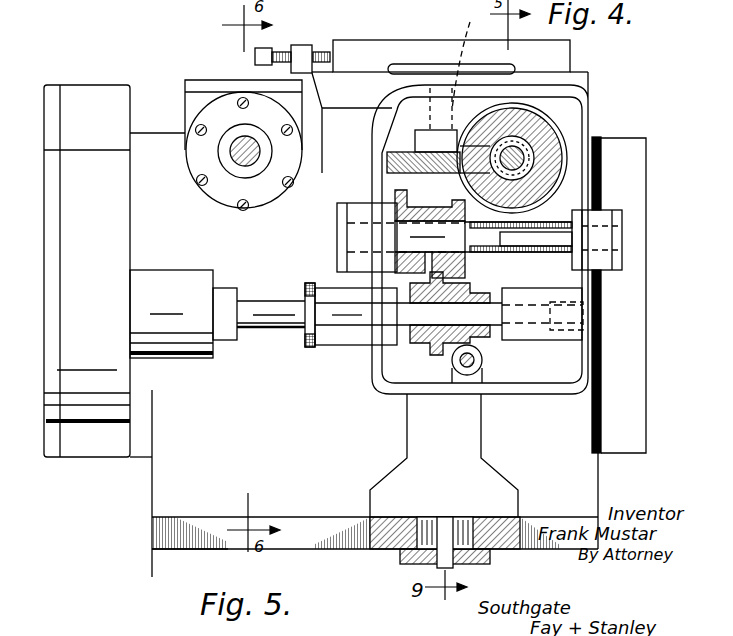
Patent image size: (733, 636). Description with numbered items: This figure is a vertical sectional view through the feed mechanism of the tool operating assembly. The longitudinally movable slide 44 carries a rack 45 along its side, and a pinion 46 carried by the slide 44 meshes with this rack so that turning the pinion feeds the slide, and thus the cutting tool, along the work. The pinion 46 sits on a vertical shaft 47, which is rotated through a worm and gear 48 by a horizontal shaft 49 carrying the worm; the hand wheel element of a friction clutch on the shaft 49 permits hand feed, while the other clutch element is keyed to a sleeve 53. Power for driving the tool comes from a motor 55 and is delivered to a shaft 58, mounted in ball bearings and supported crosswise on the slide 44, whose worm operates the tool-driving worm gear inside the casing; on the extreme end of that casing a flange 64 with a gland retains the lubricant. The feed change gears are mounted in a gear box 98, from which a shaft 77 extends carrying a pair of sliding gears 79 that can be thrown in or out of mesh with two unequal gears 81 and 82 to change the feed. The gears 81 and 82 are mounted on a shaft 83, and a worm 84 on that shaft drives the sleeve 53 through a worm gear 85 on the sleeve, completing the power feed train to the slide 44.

The longitudinally movable slide 44 is at (262, 447).
The rack 45 is at (175, 549).
The pinion 46 is at (445, 528).
The vertical shaft 47 is at (450, 71).
The worm and gear 48 is at (395, 155).
The horizontal shaft 49 is at (520, 158).
The sleeve 53 is at (535, 160).
The motor 55 is at (333, 40).
The shaft 58 is at (237, 168).
The flange 64 is at (635, 392).
The shaft 77 is at (261, 308).
The sliding gears 79 is at (430, 338).
The gear 81 is at (397, 288).
The gear 82 is at (468, 262).
The shaft 83 is at (433, 235).
The worm 84 is at (540, 260).
The worm gear 85 is at (565, 178).
The gear box 98 is at (85, 258).